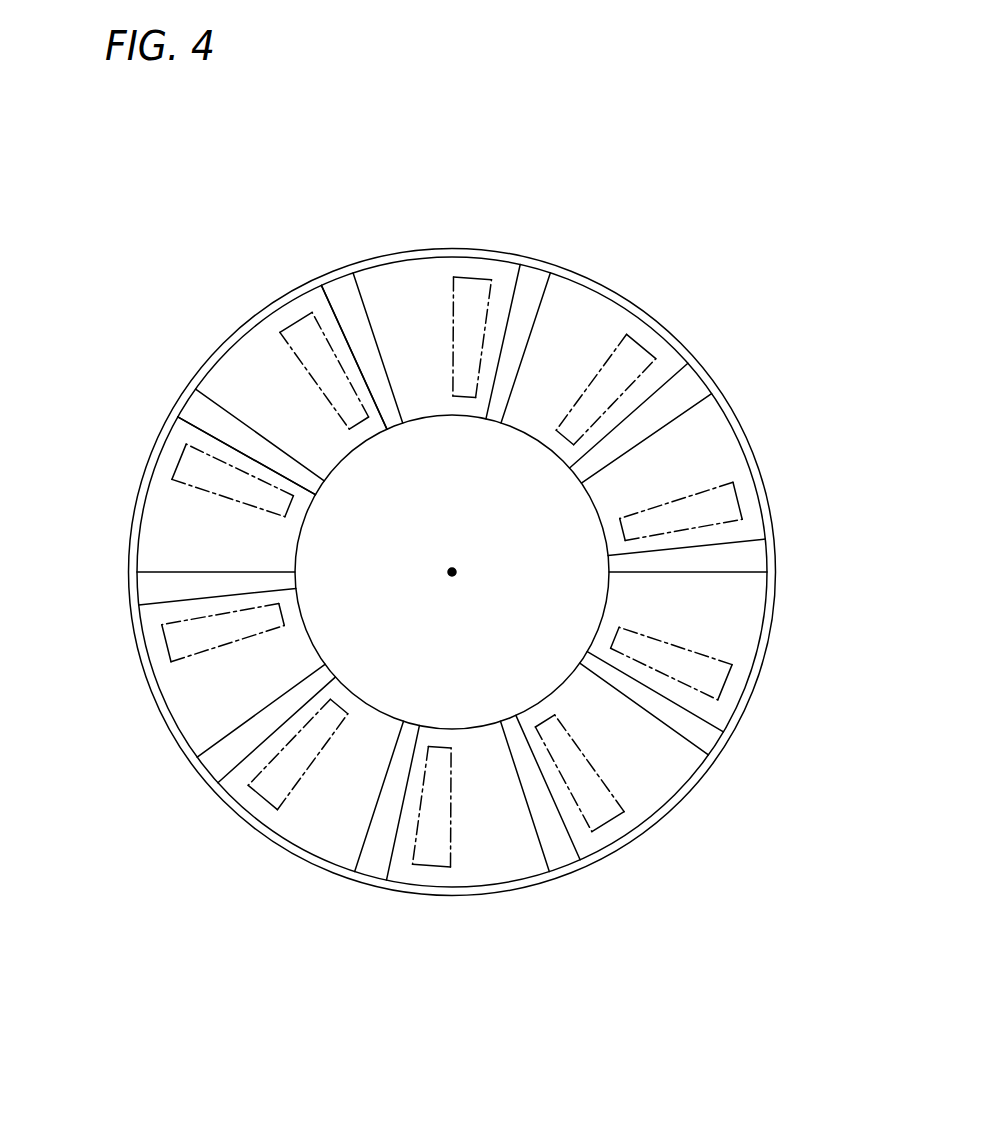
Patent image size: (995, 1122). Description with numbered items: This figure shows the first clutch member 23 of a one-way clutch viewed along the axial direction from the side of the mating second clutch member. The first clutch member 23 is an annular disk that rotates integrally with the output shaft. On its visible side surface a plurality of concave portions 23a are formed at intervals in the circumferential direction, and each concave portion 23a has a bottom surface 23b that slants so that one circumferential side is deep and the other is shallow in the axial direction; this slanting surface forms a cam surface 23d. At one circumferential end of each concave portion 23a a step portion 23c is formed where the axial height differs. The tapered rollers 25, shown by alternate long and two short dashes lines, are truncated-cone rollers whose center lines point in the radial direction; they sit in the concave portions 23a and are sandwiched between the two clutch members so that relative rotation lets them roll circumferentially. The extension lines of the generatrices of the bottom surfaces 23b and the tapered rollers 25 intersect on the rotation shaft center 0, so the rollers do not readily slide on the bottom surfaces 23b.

The first clutch member 23 is at (551, 231).
The concave portion 23a is at (413, 286).
The bottom surface 23b is at (397, 308).
The step portion 23c is at (333, 300).
The cam surface 23d is at (453, 573).
The tapered roller 25 is at (491, 279).
The rotation shaft center 0 is at (455, 578).